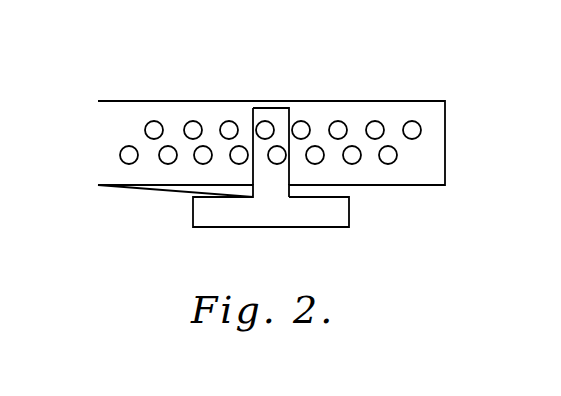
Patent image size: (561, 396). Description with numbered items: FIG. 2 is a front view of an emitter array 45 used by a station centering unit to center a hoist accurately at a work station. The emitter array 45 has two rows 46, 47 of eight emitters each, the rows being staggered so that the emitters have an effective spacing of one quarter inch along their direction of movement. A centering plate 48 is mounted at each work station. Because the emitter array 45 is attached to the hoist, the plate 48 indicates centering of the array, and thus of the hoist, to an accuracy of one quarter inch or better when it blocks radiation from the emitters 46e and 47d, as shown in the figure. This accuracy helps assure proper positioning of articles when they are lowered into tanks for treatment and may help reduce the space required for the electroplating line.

The emitter array 45 is at (382, 101).
The row of emitters 46 is at (119, 159).
The emitter 46e is at (275, 165).
The row of emitters 47 is at (143, 133).
The emitter 47d is at (264, 121).
The centering plate 48 is at (227, 217).